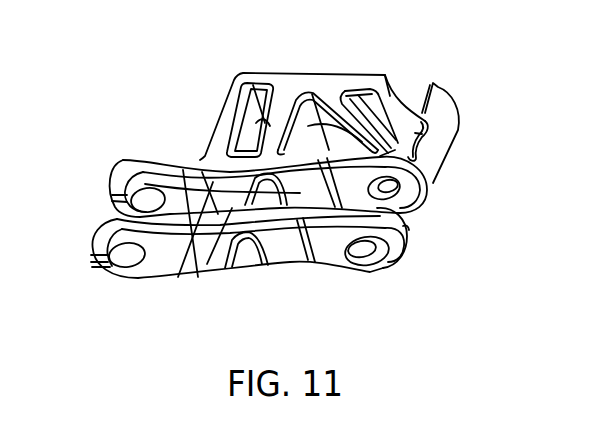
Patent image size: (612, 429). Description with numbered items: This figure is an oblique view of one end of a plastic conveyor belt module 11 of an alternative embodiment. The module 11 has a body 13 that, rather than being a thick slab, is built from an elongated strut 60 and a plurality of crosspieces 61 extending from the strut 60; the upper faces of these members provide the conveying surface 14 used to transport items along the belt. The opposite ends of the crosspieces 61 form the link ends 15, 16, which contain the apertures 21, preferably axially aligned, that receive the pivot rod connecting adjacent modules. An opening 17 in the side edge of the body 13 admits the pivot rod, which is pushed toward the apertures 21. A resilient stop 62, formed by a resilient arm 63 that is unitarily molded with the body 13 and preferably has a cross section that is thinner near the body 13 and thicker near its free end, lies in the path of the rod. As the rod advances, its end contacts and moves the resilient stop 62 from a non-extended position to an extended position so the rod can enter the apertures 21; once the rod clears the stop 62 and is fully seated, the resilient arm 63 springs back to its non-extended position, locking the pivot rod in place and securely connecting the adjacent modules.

The plastic module 11 is at (240, 72).
The body 13 is at (325, 243).
The conveying surface 14 is at (200, 157).
The link end 15 is at (105, 223).
The link end 16 is at (407, 238).
The opening 17 is at (412, 97).
The aperture 21 is at (367, 257).
The elongated strut 60 is at (244, 264).
The crosspiece 61 is at (208, 260).
The resilient stop 62 is at (415, 133).
The resilient arm 63 is at (370, 98).